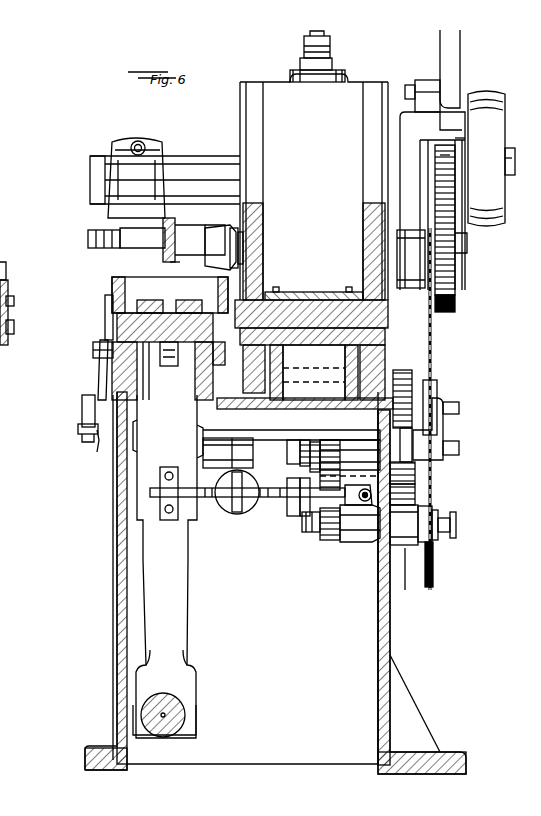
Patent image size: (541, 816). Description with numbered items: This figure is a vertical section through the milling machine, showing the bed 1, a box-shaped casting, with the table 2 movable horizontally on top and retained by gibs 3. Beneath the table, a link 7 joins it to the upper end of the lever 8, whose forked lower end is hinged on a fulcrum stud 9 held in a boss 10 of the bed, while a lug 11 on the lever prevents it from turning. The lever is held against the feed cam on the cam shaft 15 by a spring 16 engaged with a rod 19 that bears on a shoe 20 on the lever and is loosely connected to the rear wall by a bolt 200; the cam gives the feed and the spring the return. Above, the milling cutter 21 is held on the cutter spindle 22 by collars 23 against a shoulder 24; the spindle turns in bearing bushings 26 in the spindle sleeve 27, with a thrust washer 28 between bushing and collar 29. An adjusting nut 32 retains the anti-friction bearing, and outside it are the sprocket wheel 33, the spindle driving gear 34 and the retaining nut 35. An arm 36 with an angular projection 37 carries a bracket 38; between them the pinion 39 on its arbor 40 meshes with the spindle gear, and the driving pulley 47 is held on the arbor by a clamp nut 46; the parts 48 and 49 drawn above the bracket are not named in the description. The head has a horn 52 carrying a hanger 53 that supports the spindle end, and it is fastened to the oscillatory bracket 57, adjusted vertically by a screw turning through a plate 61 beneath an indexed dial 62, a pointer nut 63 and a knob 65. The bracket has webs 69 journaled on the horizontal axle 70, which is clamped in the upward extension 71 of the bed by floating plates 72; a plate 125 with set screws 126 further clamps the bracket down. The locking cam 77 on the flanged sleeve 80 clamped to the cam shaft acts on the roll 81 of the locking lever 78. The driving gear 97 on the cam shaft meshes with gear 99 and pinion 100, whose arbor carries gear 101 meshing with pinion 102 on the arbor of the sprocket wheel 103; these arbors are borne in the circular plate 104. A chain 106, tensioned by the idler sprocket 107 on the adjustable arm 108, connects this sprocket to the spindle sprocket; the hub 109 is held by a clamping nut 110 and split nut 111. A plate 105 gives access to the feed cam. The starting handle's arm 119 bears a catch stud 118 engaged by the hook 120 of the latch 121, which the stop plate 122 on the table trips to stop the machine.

The bed 1 is at (275, 583).
The table 2 is at (170, 338).
The gibs 3 is at (168, 476).
The link 7 is at (168, 364).
The lever 8 is at (166, 643).
The fulcrum stud 9 is at (185, 705).
The boss 10 is at (196, 732).
The lug 11 is at (184, 346).
The cam shaft 15 is at (266, 442).
The spring 16 is at (236, 514).
The rod 19 is at (272, 500).
The shoe 20 is at (178, 505).
The milling cutter 21 is at (158, 258).
The cutter spindle 22 is at (88, 238).
The collars 23 is at (188, 225).
The shoulder 24 is at (198, 258).
The bearing bushings 26 is at (232, 232).
The spindle sleeve 27 is at (240, 242).
The thrust washer 28 is at (215, 229).
The collar 29 is at (220, 247).
The adjusting nut 32 is at (418, 242).
The sprocket wheel 33 is at (442, 258).
The spindle driving gear 34 is at (455, 300).
The nut 35 is at (467, 250).
The arm 36 is at (432, 201).
The angular projection 37 is at (445, 122).
The bracket 38 is at (466, 128).
The pinion 39 is at (450, 156).
The arbor 40 is at (515, 162).
The clamp nut 46 is at (508, 178).
The driving pulley 47 is at (486, 158).
The block 48 is at (428, 80).
The rod 49 is at (460, 52).
The horn 52 is at (186, 173).
The hanger 53 is at (136, 178).
The oscillatory bracket 57 is at (305, 118).
The plate 61 is at (345, 74).
The indexed dial 62 is at (300, 62).
The nut 63 is at (330, 50).
The knob 65 is at (310, 34).
The web 69 is at (263, 168).
The horizontal axle 70 is at (300, 312).
The upward extension 71 is at (305, 377).
The floating plates 72 is at (328, 296).
The locking cam 77 is at (318, 442).
The locking lever 78 is at (300, 516).
The flanged sleeve 80 is at (296, 440).
The roll 81 is at (325, 518).
The driving gear 97 is at (404, 370).
The gear 99 is at (415, 494).
The pinion 100 is at (415, 476).
The gear 101 is at (345, 448).
The pinion 102 is at (330, 540).
The sprocket wheel 103 is at (433, 578).
The circular plate 104 is at (410, 577).
The plate 105 is at (113, 520).
The chain 106 is at (432, 340).
The idler sprocket 107 is at (437, 400).
The adjustable arm 108 is at (446, 425).
The hub 109 is at (418, 535).
The clamping nut 110 is at (432, 526).
The split nut 111 is at (456, 524).
The catch stud 118 is at (84, 444).
The arm 119 is at (78, 428).
The hook 120 is at (82, 406).
The latch 121 is at (100, 366).
The stop plate 122 is at (105, 304).
The plate 125 is at (12, 340).
The set screws 126 is at (6, 270).
The bolt 200 is at (350, 542).